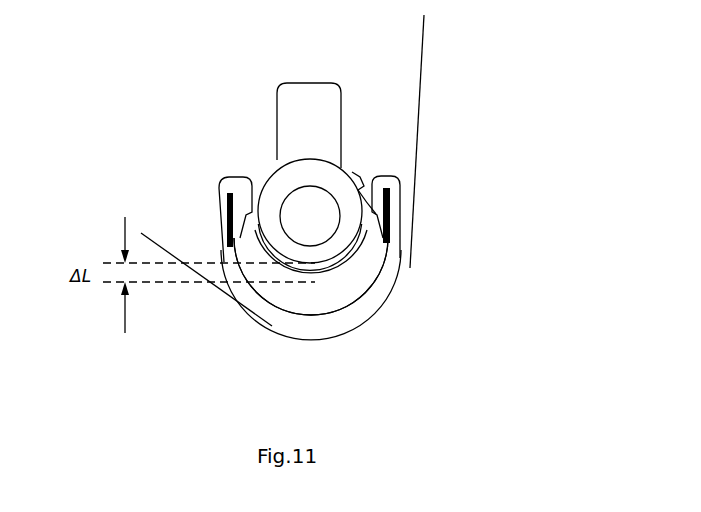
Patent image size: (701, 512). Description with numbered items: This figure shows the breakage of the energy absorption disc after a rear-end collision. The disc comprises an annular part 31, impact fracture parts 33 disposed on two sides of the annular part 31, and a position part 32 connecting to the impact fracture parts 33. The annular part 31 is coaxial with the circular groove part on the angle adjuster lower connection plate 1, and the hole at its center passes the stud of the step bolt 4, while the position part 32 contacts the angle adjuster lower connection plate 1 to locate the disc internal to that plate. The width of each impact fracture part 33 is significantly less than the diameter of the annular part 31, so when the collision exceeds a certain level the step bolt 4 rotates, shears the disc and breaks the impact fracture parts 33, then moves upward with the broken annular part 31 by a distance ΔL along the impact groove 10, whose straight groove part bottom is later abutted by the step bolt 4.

The angle adjuster lower connection plate 1 is at (395, 94).
The annular part 31 is at (292, 147).
The impact fracture parts 33 is at (376, 177).
The step bolt 4 is at (347, 232).
The impact groove 10 is at (359, 273).
The position part 32 is at (277, 316).